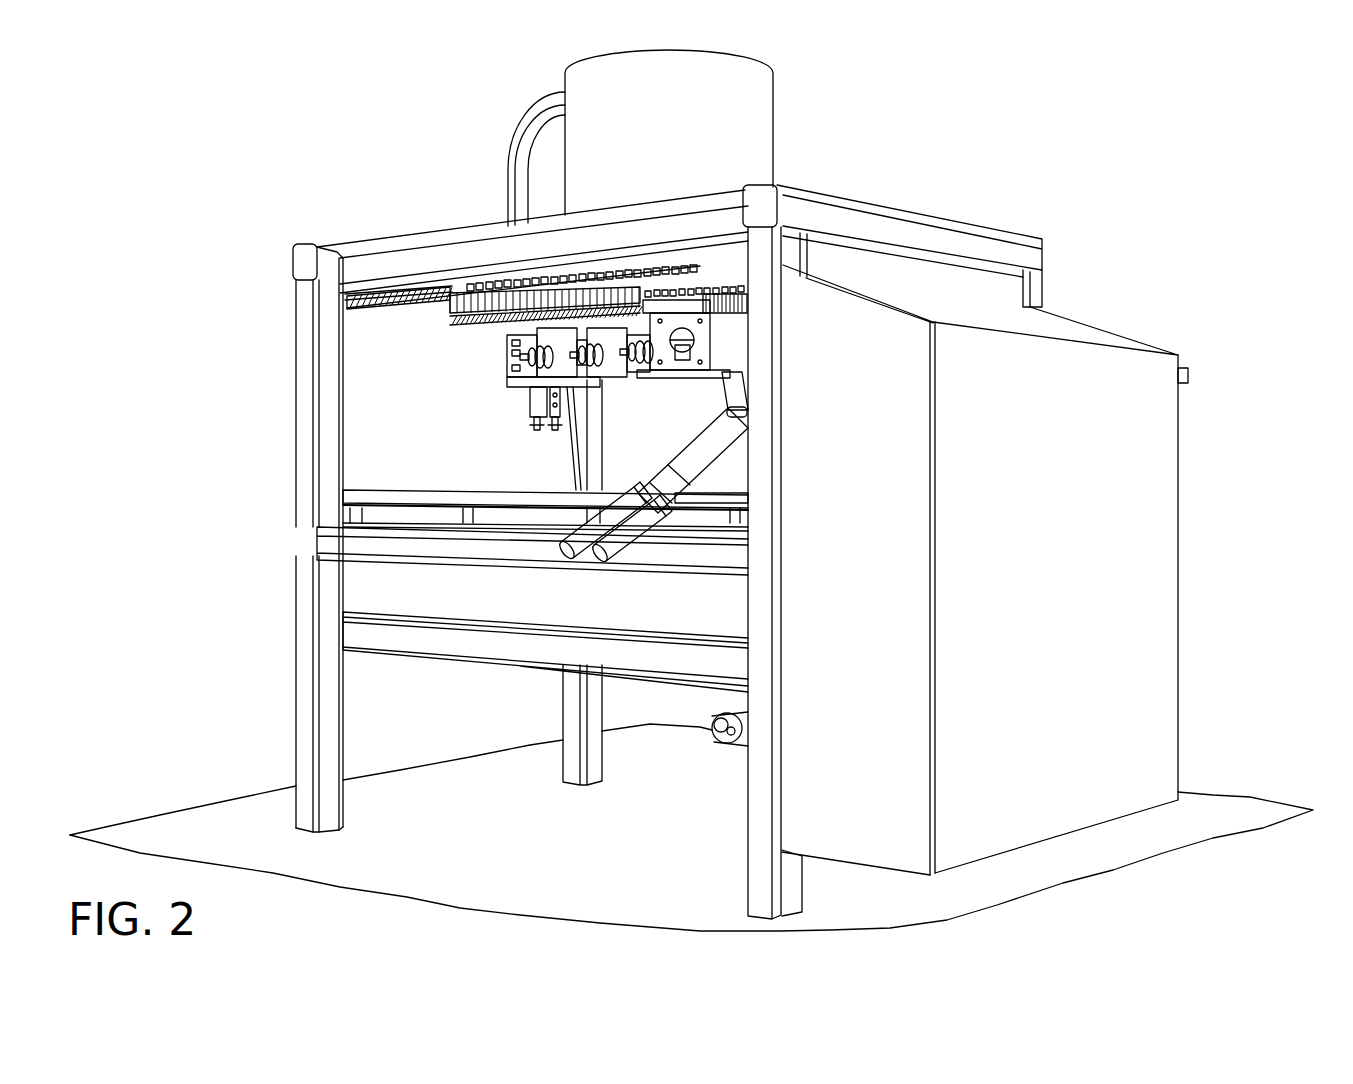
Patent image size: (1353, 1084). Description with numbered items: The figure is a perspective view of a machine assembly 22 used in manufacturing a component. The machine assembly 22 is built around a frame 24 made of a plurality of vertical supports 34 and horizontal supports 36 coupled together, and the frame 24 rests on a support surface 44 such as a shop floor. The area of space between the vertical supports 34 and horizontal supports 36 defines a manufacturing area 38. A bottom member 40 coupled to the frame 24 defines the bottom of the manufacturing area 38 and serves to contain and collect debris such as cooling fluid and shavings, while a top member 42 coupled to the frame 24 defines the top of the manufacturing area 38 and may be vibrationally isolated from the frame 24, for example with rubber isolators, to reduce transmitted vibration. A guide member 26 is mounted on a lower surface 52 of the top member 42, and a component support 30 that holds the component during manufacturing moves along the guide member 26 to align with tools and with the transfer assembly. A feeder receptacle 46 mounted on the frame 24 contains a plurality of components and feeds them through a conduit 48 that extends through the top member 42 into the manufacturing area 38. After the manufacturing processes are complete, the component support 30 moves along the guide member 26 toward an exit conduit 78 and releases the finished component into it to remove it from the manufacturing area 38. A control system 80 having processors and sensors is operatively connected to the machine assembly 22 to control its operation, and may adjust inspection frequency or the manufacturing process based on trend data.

The machine assembly 22 is at (1046, 105).
The frame 24 is at (856, 192).
The guide member 26 is at (578, 270).
The component support 30 is at (700, 340).
The vertical supports 34 is at (344, 798).
The horizontal supports 36 is at (948, 215).
The manufacturing area 38 is at (372, 428).
The bottom member 40 is at (372, 578).
The top member 42 is at (410, 285).
The support surface 44 is at (546, 862).
The feeder receptacle 46 is at (560, 75).
The conduit 48 is at (510, 152).
The lower surface 52 is at (436, 297).
The exit conduit 78 is at (622, 555).
The control system 80 is at (1064, 634).